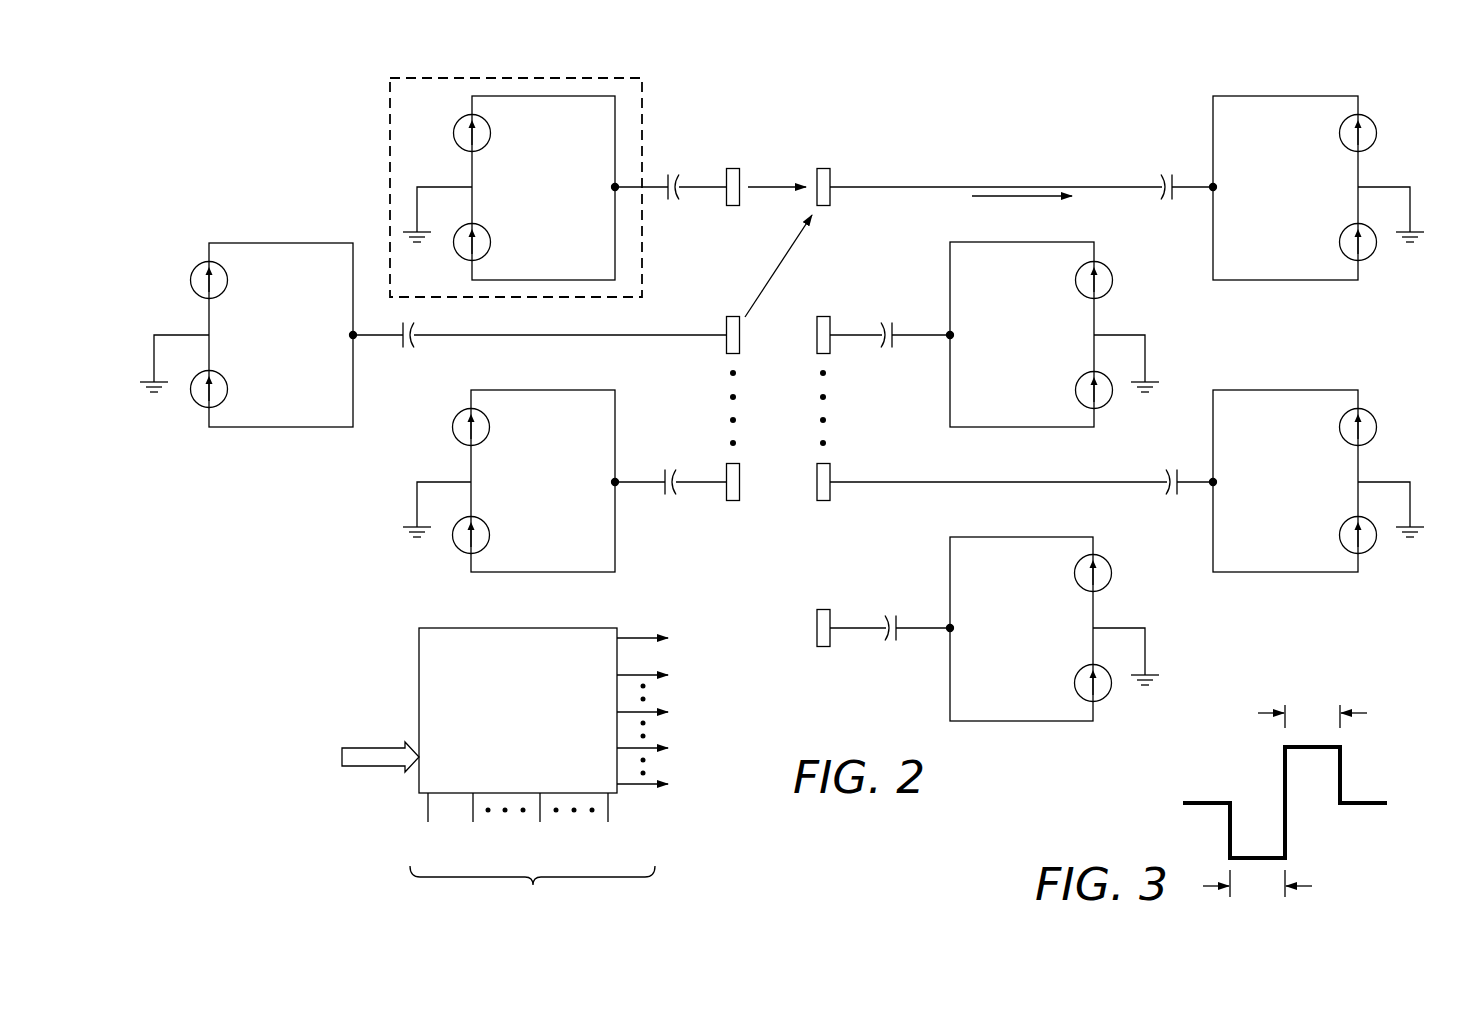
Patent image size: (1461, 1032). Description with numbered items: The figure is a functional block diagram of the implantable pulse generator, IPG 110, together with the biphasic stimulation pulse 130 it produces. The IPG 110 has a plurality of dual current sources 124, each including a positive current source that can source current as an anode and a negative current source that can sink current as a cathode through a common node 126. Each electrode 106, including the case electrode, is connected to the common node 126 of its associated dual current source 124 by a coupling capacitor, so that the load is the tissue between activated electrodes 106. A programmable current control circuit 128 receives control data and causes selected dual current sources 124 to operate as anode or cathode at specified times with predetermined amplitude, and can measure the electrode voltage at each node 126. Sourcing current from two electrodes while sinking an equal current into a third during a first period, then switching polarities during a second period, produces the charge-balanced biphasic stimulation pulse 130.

In FIG. 2, the electrodes 106 is at (740, 178).
In FIG. 2, the IPG 110 is at (248, 643).
In FIG. 2, the dual current source 124 is at (390, 104).
In FIG. 2, the common node 126 is at (616, 186).
In FIG. 2, the programmable current control circuit 128 is at (419, 636).
In FIG. 3, the biphasic stimulation pulse 130 is at (1283, 750).